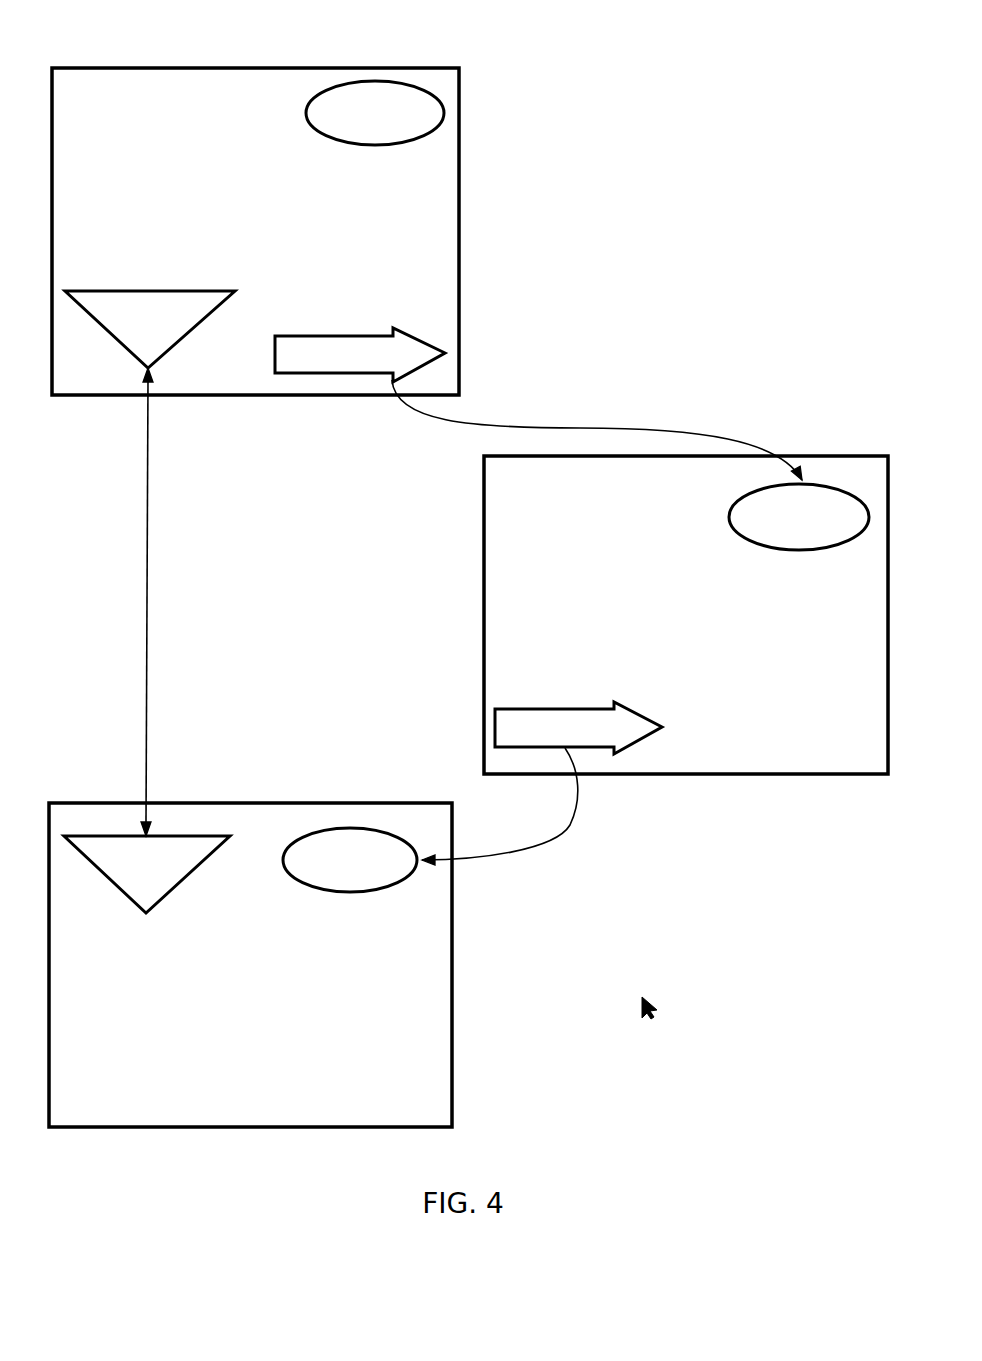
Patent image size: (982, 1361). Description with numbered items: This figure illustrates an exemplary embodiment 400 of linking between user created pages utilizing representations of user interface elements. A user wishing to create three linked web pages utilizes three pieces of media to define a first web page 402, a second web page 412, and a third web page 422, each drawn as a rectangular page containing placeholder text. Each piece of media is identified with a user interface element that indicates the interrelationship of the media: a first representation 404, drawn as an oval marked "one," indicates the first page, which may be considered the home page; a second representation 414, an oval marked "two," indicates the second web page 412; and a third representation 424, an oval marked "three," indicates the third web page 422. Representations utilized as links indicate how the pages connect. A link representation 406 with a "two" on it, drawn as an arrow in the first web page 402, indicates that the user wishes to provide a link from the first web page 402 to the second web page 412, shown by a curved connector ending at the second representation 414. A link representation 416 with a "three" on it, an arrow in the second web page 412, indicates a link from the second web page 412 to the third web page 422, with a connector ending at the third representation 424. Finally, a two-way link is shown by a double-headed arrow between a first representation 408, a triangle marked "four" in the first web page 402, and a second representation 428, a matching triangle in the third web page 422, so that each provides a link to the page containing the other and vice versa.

The cursor 400 is at (650, 1017).
The first web page 402 is at (258, 68).
The first representation 404 is at (372, 147).
The link representation 406 is at (305, 335).
The first representation 408 is at (148, 290).
The second web page 412 is at (484, 538).
The second representation 414 is at (803, 550).
The link representation 416 is at (525, 708).
The third web page 422 is at (452, 963).
The third representation 424 is at (361, 892).
The second representation 428 is at (190, 870).